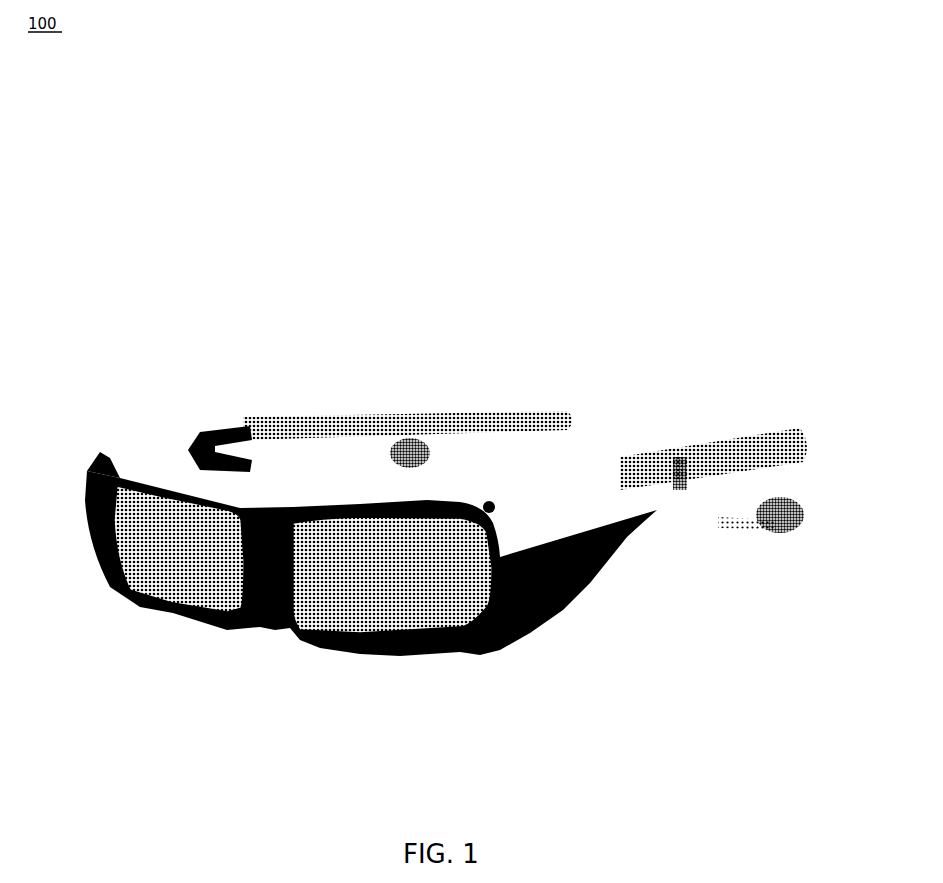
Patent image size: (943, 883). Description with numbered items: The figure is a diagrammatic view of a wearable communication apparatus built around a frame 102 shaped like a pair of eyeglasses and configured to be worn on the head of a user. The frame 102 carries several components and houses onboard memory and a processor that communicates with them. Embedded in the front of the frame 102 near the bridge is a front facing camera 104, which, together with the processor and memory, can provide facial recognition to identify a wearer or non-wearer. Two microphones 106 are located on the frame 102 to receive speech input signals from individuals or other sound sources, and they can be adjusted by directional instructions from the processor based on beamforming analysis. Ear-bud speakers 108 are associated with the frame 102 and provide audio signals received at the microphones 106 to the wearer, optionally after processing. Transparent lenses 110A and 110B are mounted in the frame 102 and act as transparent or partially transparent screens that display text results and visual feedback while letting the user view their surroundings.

The frame 102 is at (583, 597).
The front facing camera 104 is at (242, 556).
The microphone 106 is at (483, 501).
The speaker 108 is at (765, 500).
The transparent lens 110A is at (117, 567).
The transparent lens 110B is at (400, 610).